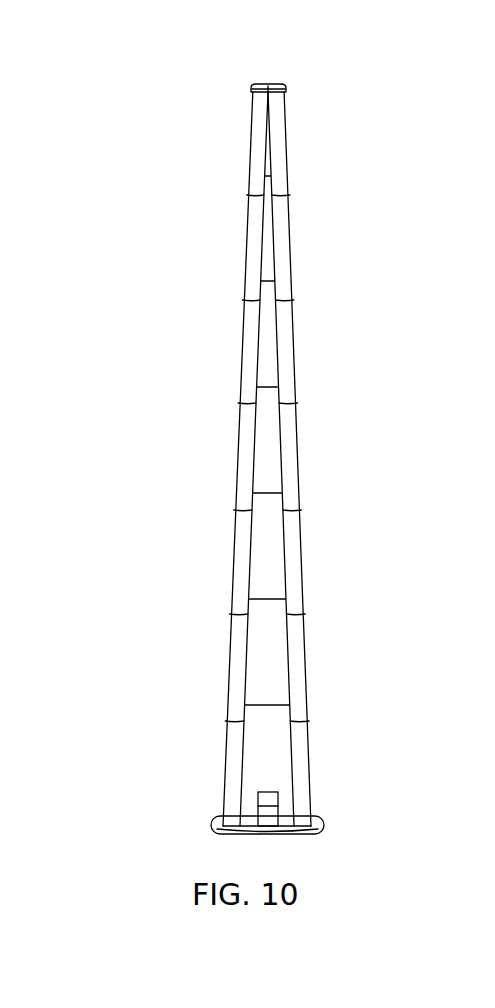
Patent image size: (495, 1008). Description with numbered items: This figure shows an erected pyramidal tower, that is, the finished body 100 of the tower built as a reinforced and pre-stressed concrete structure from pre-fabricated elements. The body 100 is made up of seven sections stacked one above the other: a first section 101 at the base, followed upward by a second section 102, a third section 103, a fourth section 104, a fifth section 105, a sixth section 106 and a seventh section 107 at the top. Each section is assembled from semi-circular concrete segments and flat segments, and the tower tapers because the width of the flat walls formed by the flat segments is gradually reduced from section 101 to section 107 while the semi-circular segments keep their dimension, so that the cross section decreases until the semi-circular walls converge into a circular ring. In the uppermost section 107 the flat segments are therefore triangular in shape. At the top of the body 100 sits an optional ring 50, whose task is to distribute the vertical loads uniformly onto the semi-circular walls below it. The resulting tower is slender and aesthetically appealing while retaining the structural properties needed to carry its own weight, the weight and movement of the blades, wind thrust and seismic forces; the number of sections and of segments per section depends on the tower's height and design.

The body 100 is at (322, 366).
The ring 50 is at (271, 84).
The first section 101 is at (225, 721).
The second section 102 is at (230, 614).
The third section 103 is at (234, 510).
The fourth section 104 is at (238, 403).
The fifth section 105 is at (242, 300).
The sixth section 106 is at (247, 195).
The seventh section 107 is at (251, 92).